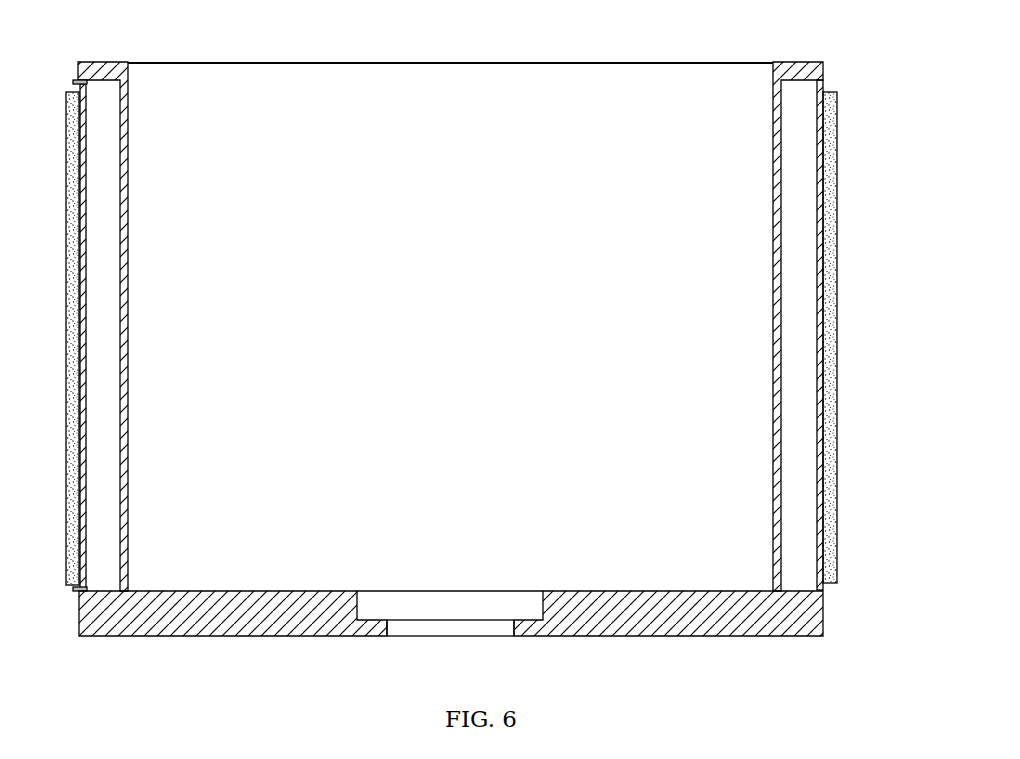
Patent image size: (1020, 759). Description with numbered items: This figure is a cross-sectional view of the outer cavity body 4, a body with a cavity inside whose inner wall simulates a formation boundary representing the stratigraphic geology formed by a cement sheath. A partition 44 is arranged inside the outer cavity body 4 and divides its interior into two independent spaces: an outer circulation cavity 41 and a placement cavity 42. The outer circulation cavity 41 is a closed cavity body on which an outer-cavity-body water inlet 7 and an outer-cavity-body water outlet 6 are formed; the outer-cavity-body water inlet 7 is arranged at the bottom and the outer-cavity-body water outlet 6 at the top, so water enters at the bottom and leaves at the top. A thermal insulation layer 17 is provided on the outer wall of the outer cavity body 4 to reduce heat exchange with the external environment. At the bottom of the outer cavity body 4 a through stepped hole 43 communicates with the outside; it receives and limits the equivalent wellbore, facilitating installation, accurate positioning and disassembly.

The outer cavity body 4 is at (202, 625).
The outer-cavity-body water outlet 6 is at (73, 83).
The outer-cavity-body water inlet 7 is at (72, 591).
The thermal insulation layer 17 is at (72, 450).
The outer circulation cavity 41 is at (100, 261).
The placement cavity 42 is at (698, 437).
The stepped hole 43 is at (457, 609).
The partition 44 is at (123, 215).